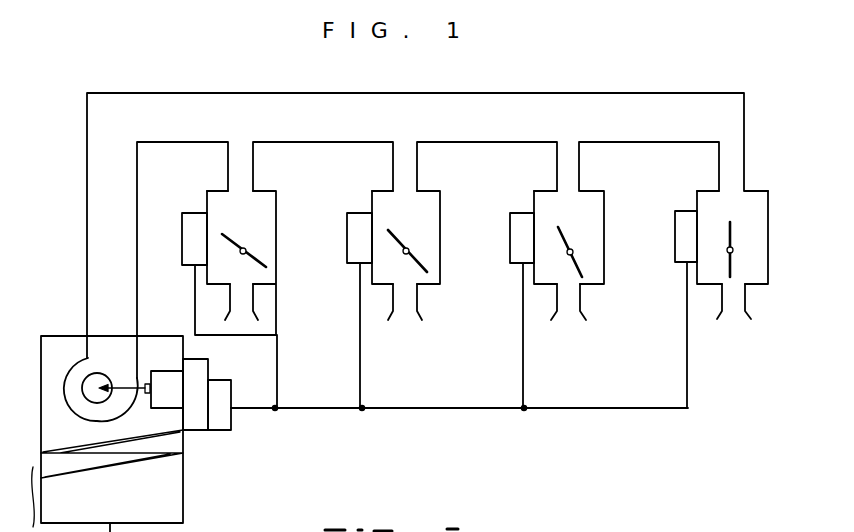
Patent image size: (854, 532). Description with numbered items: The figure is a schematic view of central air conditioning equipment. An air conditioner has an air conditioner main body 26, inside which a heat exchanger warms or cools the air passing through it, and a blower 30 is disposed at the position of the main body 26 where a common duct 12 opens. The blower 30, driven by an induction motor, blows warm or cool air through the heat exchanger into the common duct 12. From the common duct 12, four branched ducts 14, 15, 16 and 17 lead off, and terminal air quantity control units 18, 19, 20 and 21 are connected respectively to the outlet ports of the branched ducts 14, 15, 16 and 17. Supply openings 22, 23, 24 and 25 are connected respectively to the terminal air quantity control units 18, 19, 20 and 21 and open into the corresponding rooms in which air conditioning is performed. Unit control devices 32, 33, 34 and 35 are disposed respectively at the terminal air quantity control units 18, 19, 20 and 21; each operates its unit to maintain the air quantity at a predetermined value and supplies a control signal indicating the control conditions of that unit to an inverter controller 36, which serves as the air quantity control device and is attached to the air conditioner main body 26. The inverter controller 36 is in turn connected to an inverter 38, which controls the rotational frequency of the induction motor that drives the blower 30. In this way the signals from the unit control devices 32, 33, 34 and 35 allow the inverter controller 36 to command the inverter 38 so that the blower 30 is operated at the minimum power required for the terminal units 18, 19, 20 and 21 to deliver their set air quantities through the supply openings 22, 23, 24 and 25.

The common duct 12 is at (193, 108).
The branched duct 14 is at (719, 166).
The branched duct 15 is at (557, 168).
The branched duct 16 is at (393, 168).
The branched duct 17 is at (228, 171).
The terminal air quantity control unit 18 is at (756, 286).
The terminal air quantity control unit 19 is at (604, 263).
The terminal air quantity control unit 20 is at (440, 262).
The terminal air quantity control unit 21 is at (277, 268).
The supply opening 22 is at (730, 312).
The supply opening 23 is at (568, 312).
The supply opening 24 is at (407, 313).
The supply opening 25 is at (247, 318).
The air conditioner main body 26 is at (38, 368).
The blower 30 is at (78, 368).
The unit control device 32 is at (675, 228).
The unit control device 33 is at (510, 230).
The unit control device 34 is at (347, 230).
The unit control device 35 is at (182, 236).
The inverter controller 36 is at (231, 418).
The inverter 38 is at (198, 423).